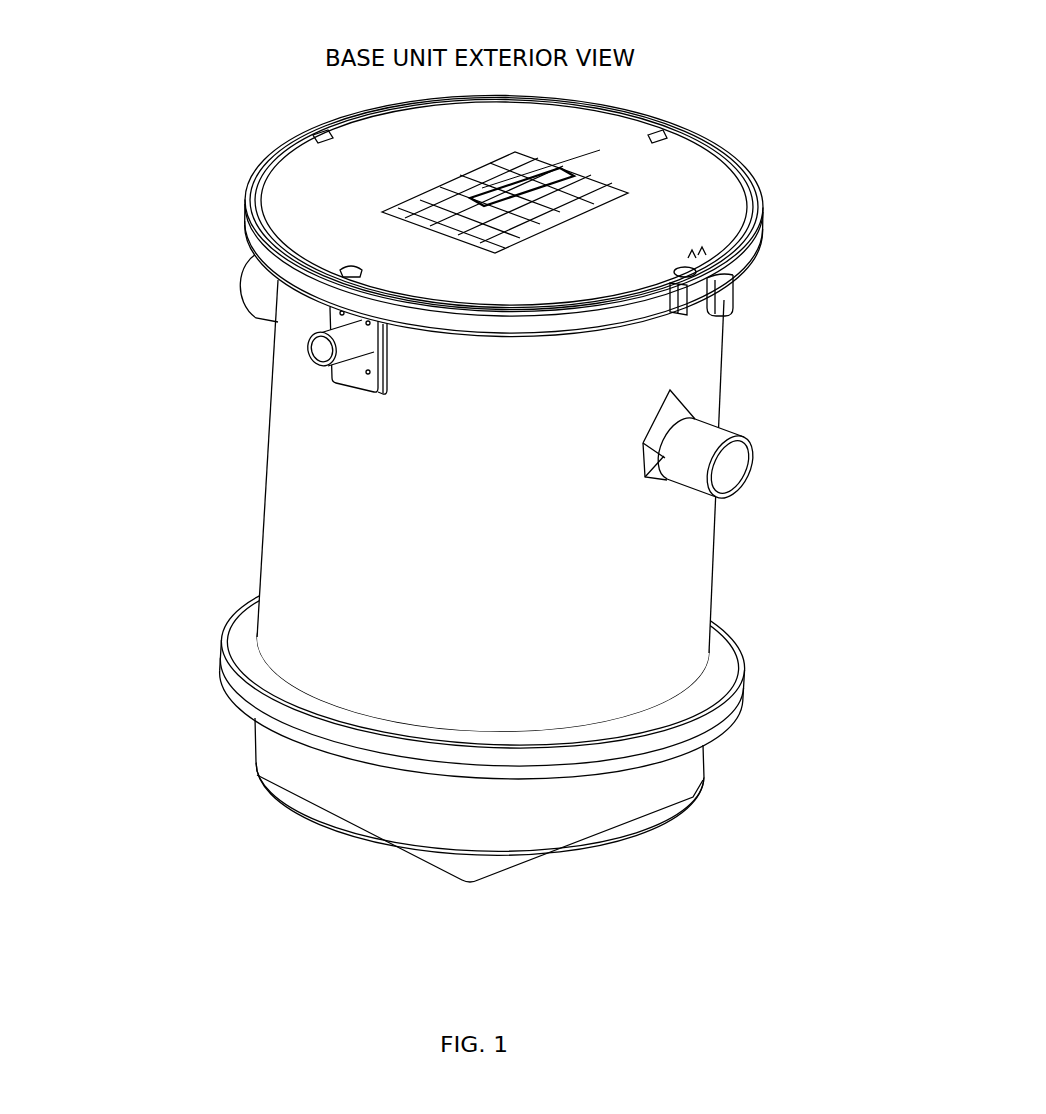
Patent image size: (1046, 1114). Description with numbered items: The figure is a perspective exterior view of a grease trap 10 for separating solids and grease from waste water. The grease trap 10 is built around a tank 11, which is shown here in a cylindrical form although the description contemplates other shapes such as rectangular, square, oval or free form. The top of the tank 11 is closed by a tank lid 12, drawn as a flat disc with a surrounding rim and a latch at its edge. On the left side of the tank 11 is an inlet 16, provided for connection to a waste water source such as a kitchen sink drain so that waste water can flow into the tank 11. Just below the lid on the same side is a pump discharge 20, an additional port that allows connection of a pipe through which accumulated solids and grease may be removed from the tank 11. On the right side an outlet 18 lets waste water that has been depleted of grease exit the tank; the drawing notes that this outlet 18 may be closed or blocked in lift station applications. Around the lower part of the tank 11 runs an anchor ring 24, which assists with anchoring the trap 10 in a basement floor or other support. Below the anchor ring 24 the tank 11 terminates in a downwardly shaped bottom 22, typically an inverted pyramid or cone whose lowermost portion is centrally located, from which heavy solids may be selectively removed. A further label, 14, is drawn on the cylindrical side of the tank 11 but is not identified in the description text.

The grease trap 10 is at (688, 105).
The tank 11 is at (526, 413).
The tank lid 12 is at (723, 210).
The tank body 14 is at (708, 364).
The inlet 16 is at (245, 300).
The outlet 18 is at (731, 502).
The pump discharge 20 is at (310, 360).
The downwardly shaped bottom 22 is at (493, 867).
The anchor ring 24 is at (723, 674).